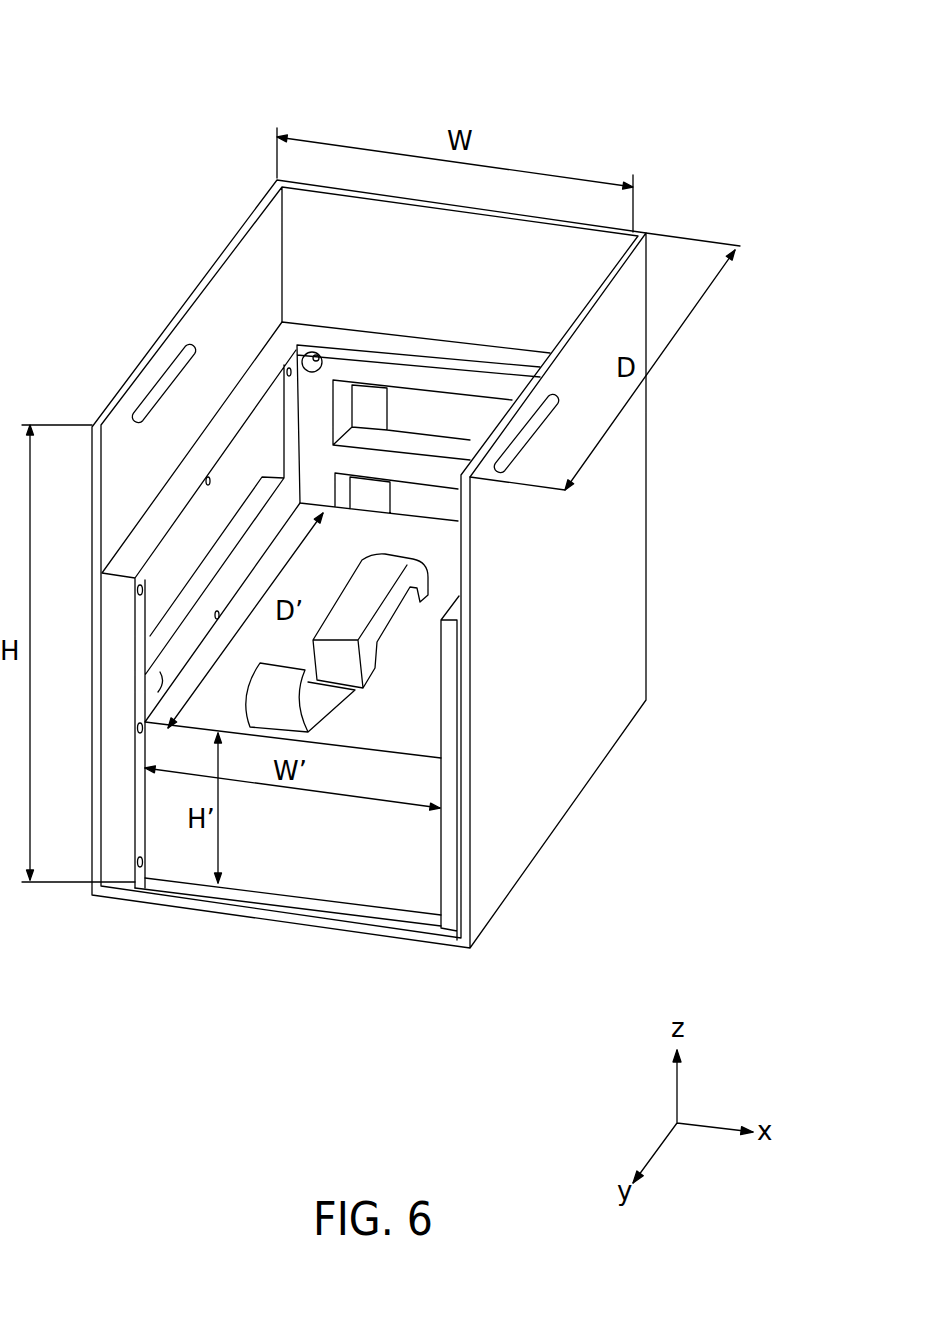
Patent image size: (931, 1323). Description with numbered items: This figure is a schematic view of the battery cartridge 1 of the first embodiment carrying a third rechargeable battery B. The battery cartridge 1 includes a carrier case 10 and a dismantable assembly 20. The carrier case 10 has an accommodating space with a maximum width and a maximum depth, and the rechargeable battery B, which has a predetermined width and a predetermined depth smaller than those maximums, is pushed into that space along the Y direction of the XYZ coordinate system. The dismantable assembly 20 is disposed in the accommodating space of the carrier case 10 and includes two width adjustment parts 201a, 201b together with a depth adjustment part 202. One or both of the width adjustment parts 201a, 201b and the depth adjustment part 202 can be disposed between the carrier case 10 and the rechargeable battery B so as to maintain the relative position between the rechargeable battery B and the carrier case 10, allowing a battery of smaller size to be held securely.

The battery cartridge 1 is at (106, 38).
The carrier case 10 is at (625, 513).
The dismantable assembly 20 is at (413, 636).
The width adjustment part 201a is at (123, 873).
The width adjustment part 201b is at (458, 920).
The depth adjustment part 202 is at (431, 352).
The rechargeable battery B is at (303, 887).